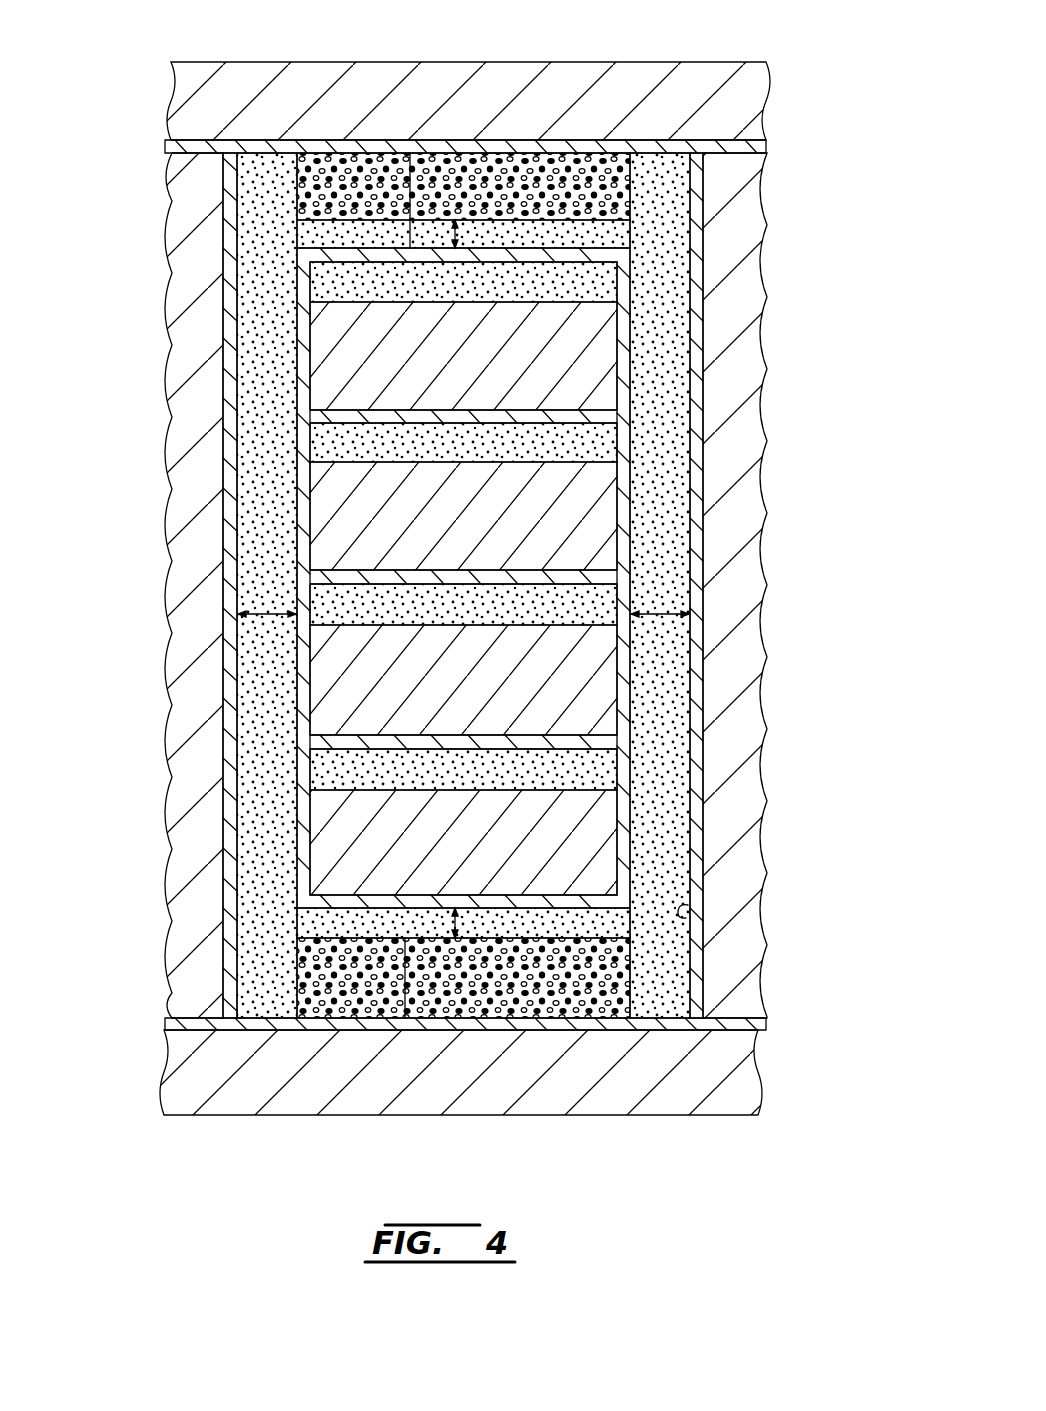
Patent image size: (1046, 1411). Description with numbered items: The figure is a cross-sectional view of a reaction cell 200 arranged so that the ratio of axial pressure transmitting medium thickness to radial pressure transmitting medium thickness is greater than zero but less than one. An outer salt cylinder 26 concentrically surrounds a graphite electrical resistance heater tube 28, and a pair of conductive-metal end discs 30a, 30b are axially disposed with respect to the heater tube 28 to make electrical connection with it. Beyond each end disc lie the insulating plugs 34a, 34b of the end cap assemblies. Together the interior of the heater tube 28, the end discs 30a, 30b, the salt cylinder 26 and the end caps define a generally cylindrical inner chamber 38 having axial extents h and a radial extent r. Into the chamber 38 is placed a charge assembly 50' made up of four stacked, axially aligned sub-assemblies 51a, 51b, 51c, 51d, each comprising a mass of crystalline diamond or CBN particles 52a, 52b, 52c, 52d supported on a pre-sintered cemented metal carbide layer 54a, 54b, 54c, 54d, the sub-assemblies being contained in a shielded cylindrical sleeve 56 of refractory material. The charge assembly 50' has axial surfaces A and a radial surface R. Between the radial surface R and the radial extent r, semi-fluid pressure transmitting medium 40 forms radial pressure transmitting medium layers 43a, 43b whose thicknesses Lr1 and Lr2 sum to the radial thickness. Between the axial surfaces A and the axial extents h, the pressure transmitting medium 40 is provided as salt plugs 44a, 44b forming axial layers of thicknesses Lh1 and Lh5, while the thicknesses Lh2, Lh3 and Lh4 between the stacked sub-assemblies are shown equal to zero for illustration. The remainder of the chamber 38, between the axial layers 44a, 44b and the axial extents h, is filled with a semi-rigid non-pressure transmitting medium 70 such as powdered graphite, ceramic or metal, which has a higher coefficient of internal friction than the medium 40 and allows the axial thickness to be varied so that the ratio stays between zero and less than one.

The conductive-metal end disc 30a is at (654, 141).
The conductive-metal end disc 30b is at (657, 1031).
The insulating plug 34a is at (623, 62).
The insulating plug 34b is at (618, 1116).
The non-pressure transmitting medium 70 is at (372, 180).
The axial surface A is at (410, 153).
The thickness of axial pressure transmitting medium layer Lh1 is at (460, 232).
The thickness of axial pressure transmitting medium layer Lh2 is at (297, 415).
The thickness of axial pressure transmitting medium layer Lh3 is at (297, 590).
The thickness of axial pressure transmitting medium layer Lh4 is at (297, 743).
The thickness of axial pressure transmitting medium layer Lh5 is at (456, 940).
The thickness of radial pressure transmitting medium layer Lr1 is at (670, 620).
The thickness of radial pressure transmitting medium layer Lr2 is at (265, 618).
The salt plug 44a is at (303, 232).
The salt plug 44b is at (303, 913).
The inner chamber 38 is at (280, 285).
The sub-assembly 51a is at (296, 327).
The sub-assembly 51b is at (296, 498).
The sub-assembly 51c is at (296, 680).
The sub-assembly 51d is at (296, 820).
The salt cylinder 26 is at (178, 336).
The graphite electrical resistance heater tube 28 is at (217, 947).
The radial pressure transmitting medium layer 43a is at (670, 568).
The radial pressure transmitting medium layer 43b is at (257, 380).
The pressure transmitting medium 40 is at (620, 235).
The shielded cylindrical sleeve 56 is at (295, 438).
The radial surface R is at (292, 566).
The crystalline mass 52a is at (590, 290).
The crystalline mass 52b is at (600, 448).
The crystalline mass 52c is at (610, 597).
The crystalline mass 52d is at (610, 770).
The cemented metal carbide layer 54a is at (600, 352).
The cemented metal carbide layer 54b is at (600, 520).
The cemented metal carbide layer 54c is at (610, 707).
The cemented metal carbide layer 54d is at (608, 858).
The charge assembly 50' is at (740, 814).
The radial extent r is at (690, 912).
The axial extent h is at (632, 163).
The reaction cell 200 is at (809, 155).